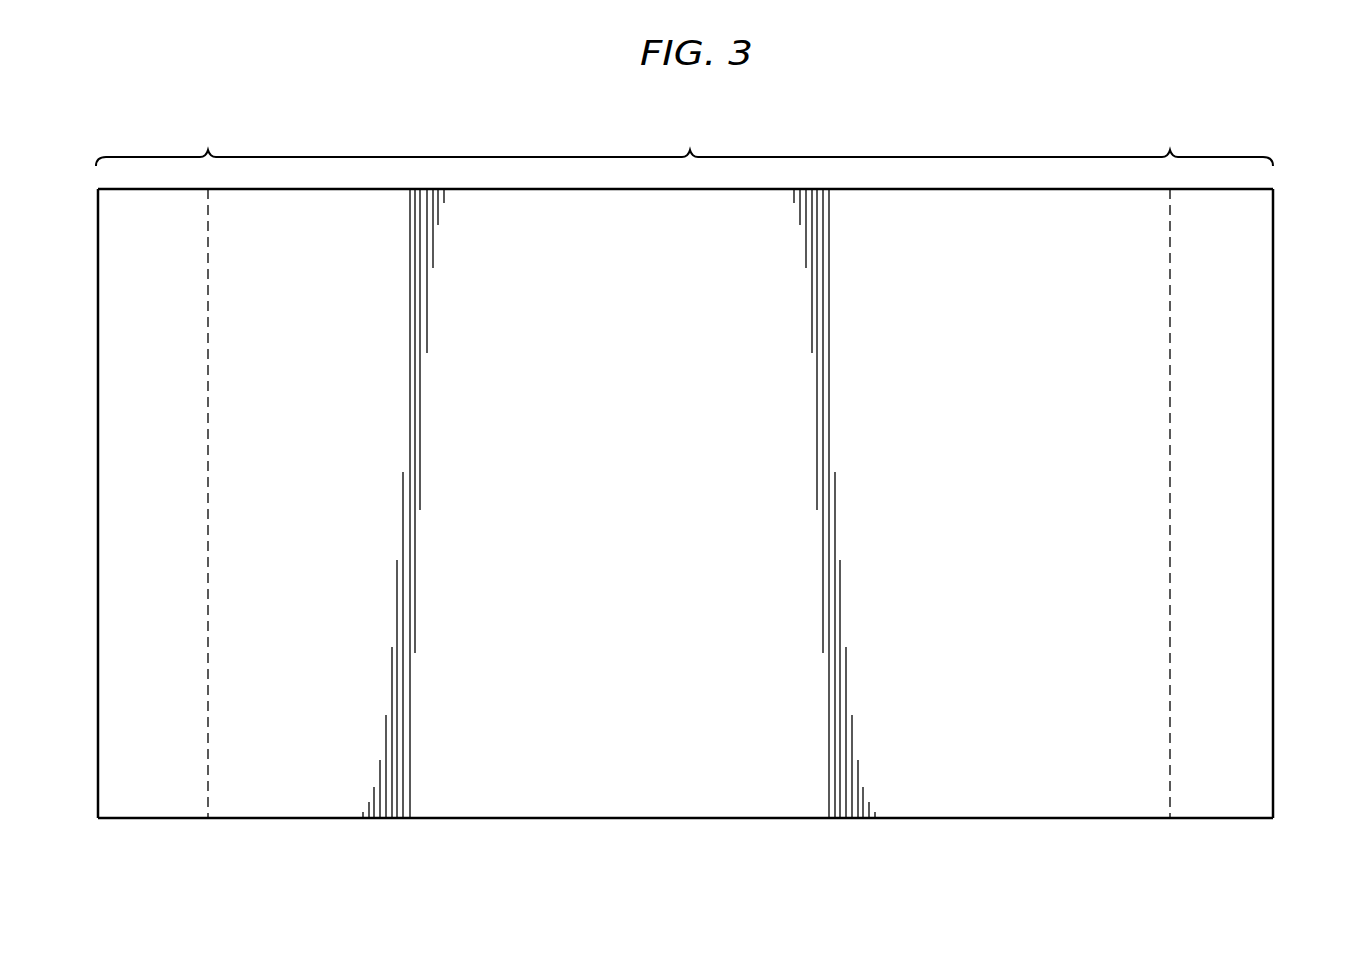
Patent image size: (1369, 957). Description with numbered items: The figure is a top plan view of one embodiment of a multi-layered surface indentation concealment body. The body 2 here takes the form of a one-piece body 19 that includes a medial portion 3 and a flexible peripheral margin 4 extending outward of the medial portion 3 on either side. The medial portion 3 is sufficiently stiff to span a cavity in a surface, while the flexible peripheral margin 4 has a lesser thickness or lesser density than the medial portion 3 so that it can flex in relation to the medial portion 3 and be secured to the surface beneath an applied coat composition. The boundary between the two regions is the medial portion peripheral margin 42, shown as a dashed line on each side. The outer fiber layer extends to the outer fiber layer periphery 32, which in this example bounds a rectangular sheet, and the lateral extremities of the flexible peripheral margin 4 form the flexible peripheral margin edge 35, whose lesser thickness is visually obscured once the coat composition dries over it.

The body 2 is at (645, 840).
The one-piece body 19 is at (685, 852).
The medial portion 3 is at (690, 148).
The flexible peripheral margin 4 is at (153, 148).
The outer fiber layer periphery 32 is at (1280, 324).
The flexible peripheral margin edge 35 is at (98, 397).
The medial portion peripheral margin 42 is at (208, 800).